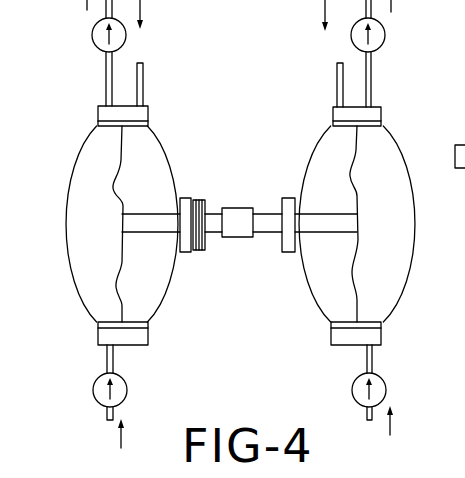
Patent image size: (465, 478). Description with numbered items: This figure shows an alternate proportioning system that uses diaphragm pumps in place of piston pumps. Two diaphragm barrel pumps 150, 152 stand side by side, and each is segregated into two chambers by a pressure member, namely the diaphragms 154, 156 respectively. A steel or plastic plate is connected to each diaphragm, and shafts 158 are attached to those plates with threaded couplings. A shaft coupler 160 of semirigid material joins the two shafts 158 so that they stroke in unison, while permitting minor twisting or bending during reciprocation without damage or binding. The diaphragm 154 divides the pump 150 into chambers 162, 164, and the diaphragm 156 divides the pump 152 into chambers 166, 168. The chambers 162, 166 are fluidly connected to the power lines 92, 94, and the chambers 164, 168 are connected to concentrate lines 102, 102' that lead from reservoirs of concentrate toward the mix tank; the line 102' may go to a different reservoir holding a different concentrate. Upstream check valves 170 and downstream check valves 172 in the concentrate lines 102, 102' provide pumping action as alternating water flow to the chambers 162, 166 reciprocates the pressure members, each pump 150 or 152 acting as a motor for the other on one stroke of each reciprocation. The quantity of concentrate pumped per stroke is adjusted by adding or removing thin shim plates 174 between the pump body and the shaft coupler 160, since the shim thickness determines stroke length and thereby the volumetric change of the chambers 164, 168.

The diaphragm barrel pump 150 is at (178, 156).
The diaphragm barrel pump 152 is at (402, 118).
The diaphragm 154 is at (122, 184).
The diaphragm 156 is at (358, 183).
The shaft 158 is at (214, 218).
The shaft coupler 160 is at (237, 228).
The chamber 162 is at (158, 275).
The chamber 164 is at (105, 275).
The chamber 166 is at (337, 275).
The chamber 168 is at (395, 275).
The upstream check valve 170 is at (93, 391).
The downstream check valve 172 is at (92, 38).
The shim plate 174 is at (197, 200).
The concentrate line 102 is at (104, 212).
The concentrate line 102' is at (405, 210).
The power line 92 is at (144, 82).
The power line 94 is at (337, 82).